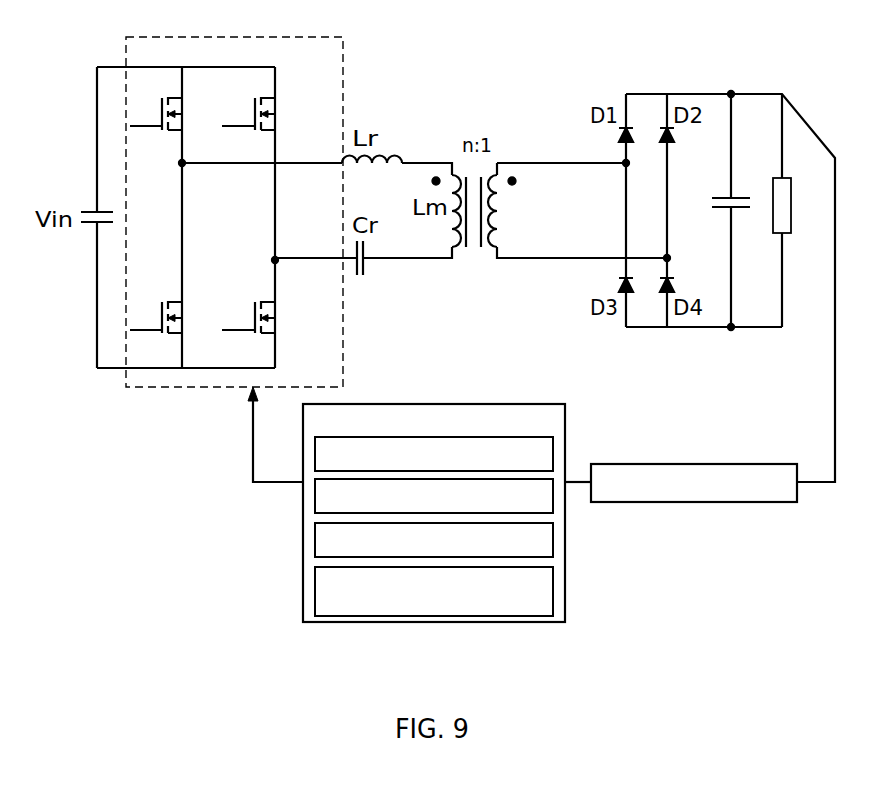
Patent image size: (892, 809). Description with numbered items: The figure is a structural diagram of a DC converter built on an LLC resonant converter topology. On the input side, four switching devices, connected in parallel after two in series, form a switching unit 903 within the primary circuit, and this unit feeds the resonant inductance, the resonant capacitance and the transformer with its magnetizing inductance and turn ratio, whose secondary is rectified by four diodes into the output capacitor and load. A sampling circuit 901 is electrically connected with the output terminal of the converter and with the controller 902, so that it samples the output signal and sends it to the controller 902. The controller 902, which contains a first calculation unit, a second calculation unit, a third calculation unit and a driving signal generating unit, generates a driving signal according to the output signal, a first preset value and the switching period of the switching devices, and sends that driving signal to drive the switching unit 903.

The sampling circuit 901 is at (685, 464).
The controller 902 is at (438, 403).
The switching unit 903 is at (342, 378).